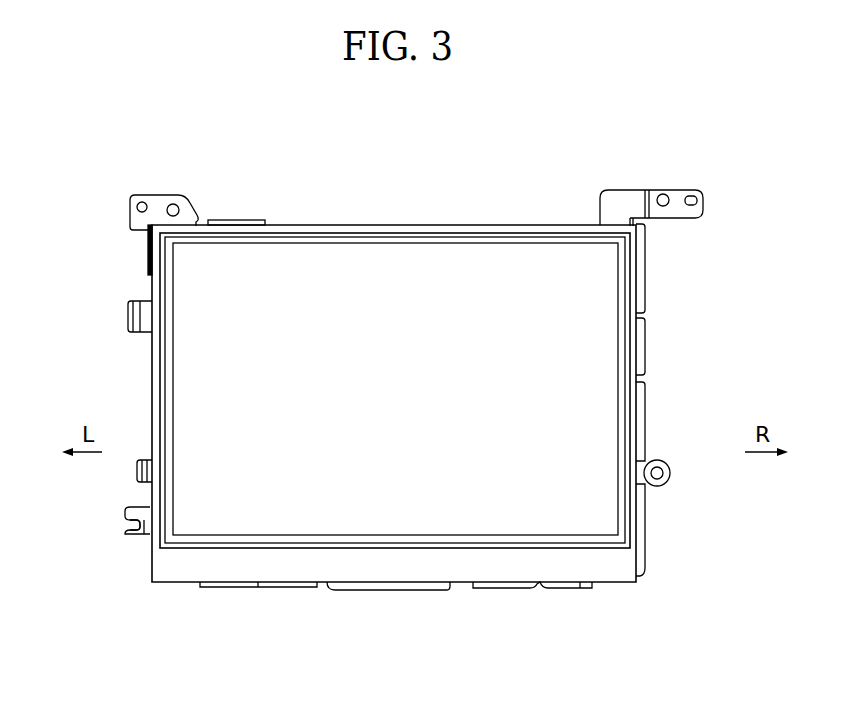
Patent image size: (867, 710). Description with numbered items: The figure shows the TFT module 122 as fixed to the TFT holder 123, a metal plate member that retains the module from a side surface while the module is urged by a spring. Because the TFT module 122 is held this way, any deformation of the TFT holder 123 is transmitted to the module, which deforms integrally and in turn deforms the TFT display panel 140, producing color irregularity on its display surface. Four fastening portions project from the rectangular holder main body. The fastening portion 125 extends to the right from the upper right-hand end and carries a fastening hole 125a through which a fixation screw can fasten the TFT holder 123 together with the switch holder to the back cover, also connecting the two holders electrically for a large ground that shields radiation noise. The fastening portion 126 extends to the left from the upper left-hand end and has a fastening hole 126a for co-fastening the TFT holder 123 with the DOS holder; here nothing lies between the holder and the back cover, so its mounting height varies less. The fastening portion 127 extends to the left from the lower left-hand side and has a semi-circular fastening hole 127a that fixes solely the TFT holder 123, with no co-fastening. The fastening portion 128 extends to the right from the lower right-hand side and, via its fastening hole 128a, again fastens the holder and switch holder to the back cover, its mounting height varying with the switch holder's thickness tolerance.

The TFT module 122 is at (635, 602).
The TFT holder 123 is at (617, 197).
The fastening portion 125 is at (682, 189).
The fastening hole 125a is at (662, 207).
The fastening portion 126 is at (158, 196).
The fastening hole 126a is at (180, 204).
The fastening portion 127 is at (137, 536).
The semi-circular fastening hole 127a is at (127, 518).
The fastening portion 128 is at (666, 460).
The fastening hole 128a is at (662, 480).
The TFT display panel 140 is at (262, 522).